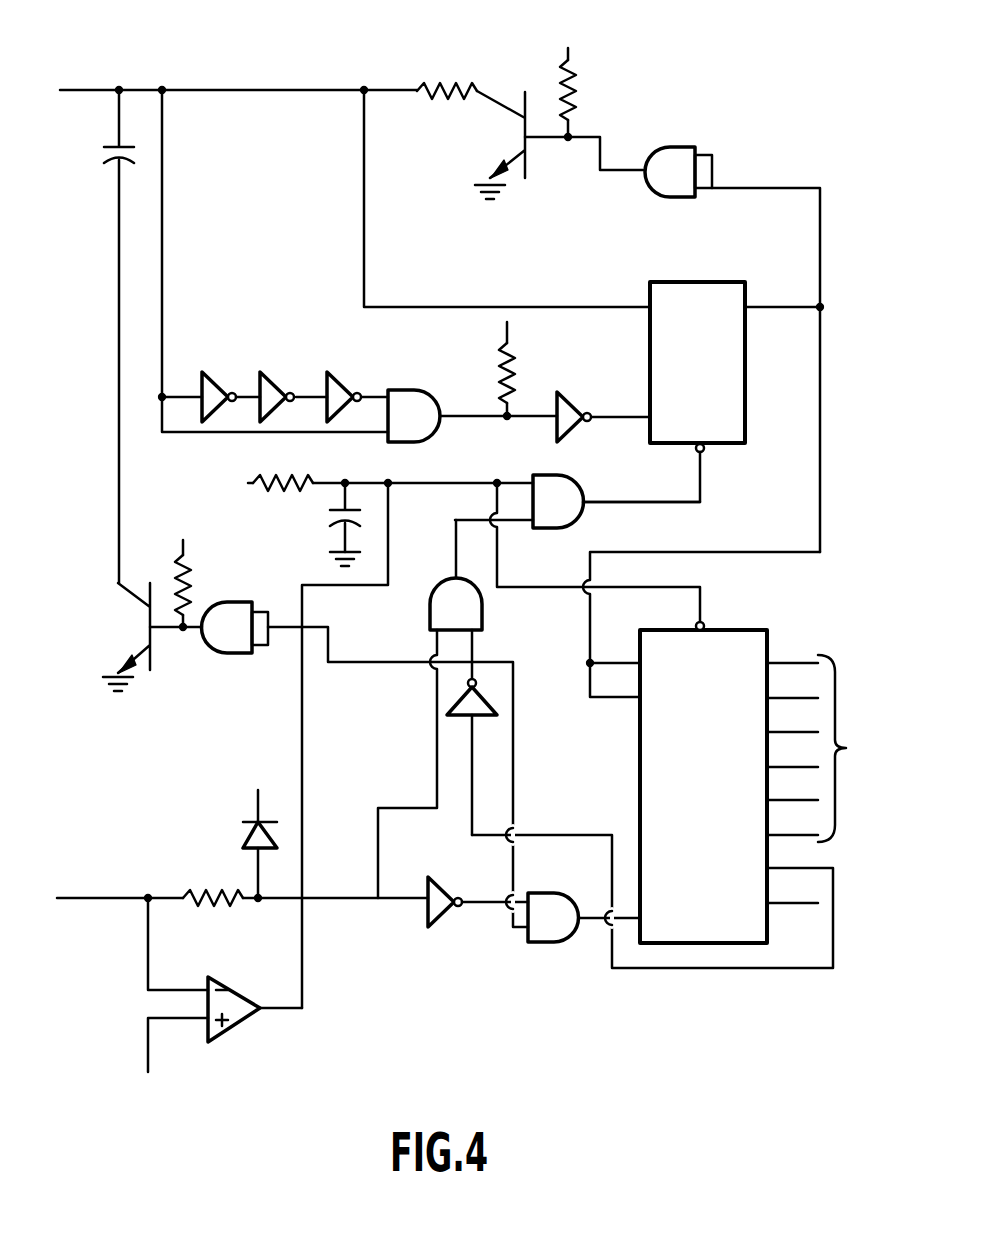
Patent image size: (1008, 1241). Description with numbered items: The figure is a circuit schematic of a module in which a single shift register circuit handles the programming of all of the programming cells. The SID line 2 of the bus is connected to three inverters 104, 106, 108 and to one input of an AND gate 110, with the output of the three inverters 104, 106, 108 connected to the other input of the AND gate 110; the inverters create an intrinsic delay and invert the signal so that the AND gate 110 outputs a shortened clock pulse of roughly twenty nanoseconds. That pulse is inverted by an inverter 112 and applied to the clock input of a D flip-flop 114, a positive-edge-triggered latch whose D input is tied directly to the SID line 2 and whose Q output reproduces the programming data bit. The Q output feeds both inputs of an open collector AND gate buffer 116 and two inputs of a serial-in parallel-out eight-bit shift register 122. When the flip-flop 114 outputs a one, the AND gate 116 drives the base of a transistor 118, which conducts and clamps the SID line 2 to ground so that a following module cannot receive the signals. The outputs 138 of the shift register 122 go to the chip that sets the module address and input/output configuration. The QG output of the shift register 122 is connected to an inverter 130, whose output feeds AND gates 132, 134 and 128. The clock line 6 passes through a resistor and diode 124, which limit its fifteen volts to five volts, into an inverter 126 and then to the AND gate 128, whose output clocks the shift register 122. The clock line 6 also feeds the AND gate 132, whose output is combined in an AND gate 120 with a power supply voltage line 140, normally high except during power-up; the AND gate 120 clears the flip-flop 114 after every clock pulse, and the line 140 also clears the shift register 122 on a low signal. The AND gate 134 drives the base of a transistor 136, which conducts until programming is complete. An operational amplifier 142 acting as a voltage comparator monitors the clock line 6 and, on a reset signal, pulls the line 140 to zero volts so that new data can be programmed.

The SID line 2 is at (75, 59).
The clock line 6 is at (71, 857).
The inverter 104 is at (208, 378).
The inverter 106 is at (272, 378).
The inverter 108 is at (340, 378).
The AND gate 110 is at (434, 396).
The inverter 112 is at (569, 406).
The D flip-flop 114 is at (695, 282).
The open collector AND gate buffer 116 is at (683, 147).
The transistor 118 is at (520, 138).
The AND gate 120 is at (584, 514).
The serial-in parallel-out 8-bit shift register 122 is at (734, 630).
The diode 124 is at (250, 834).
The inverter 126 is at (441, 922).
The AND gate 128 is at (545, 944).
The inverter 130 is at (497, 697).
The AND gate 132 is at (428, 606).
The AND gate 134 is at (245, 655).
The transistor 136 is at (146, 627).
The outputs 138 is at (830, 779).
The power supply voltage line 140 is at (417, 486).
The operational amplifier 142 is at (238, 1033).